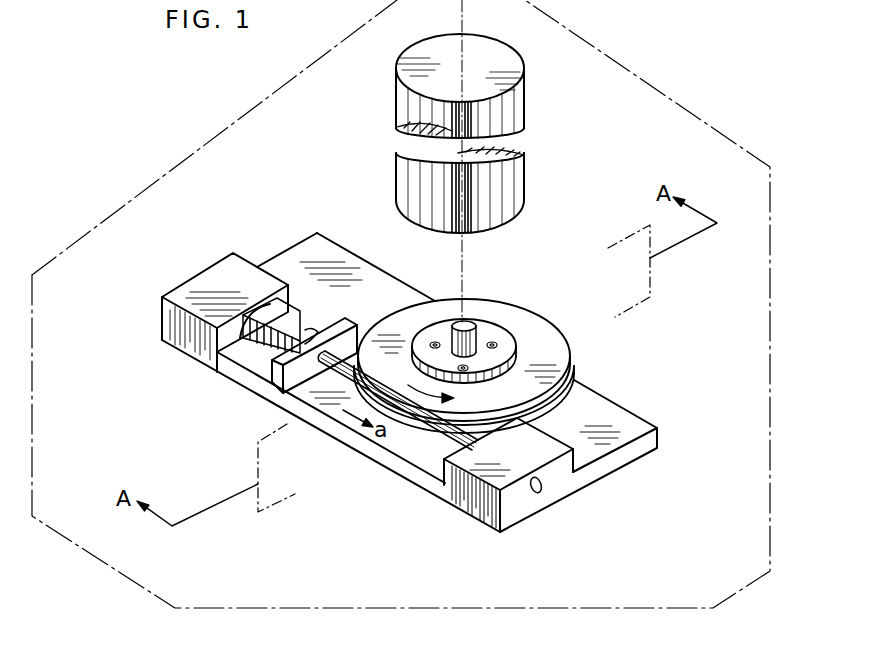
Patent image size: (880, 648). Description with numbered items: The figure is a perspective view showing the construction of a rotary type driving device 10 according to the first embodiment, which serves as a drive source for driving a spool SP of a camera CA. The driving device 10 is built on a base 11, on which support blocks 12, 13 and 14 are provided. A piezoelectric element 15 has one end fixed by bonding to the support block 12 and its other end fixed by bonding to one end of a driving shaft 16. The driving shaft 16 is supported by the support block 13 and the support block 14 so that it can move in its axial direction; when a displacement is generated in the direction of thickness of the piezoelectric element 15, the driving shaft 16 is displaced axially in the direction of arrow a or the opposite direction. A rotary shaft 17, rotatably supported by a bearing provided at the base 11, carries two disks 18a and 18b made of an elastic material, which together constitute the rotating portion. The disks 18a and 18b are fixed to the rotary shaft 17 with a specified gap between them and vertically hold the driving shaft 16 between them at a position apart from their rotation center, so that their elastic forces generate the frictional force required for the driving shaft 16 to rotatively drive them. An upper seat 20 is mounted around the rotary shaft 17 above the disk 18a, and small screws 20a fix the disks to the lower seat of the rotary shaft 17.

The rotary type driving device 10 is at (613, 500).
The base 11 is at (520, 516).
The support block 12 is at (163, 339).
The support block 13 is at (280, 379).
The support block 14 is at (484, 505).
The piezoelectric element 15 is at (258, 346).
The driving shaft 16 is at (440, 434).
The rotary shaft 17 is at (473, 320).
The disk 18a is at (568, 357).
The disk 18b is at (568, 396).
The upper seat 20 is at (418, 347).
The small screws 20a is at (494, 342).
The spool SP is at (510, 116).
The camera CA is at (770, 258).